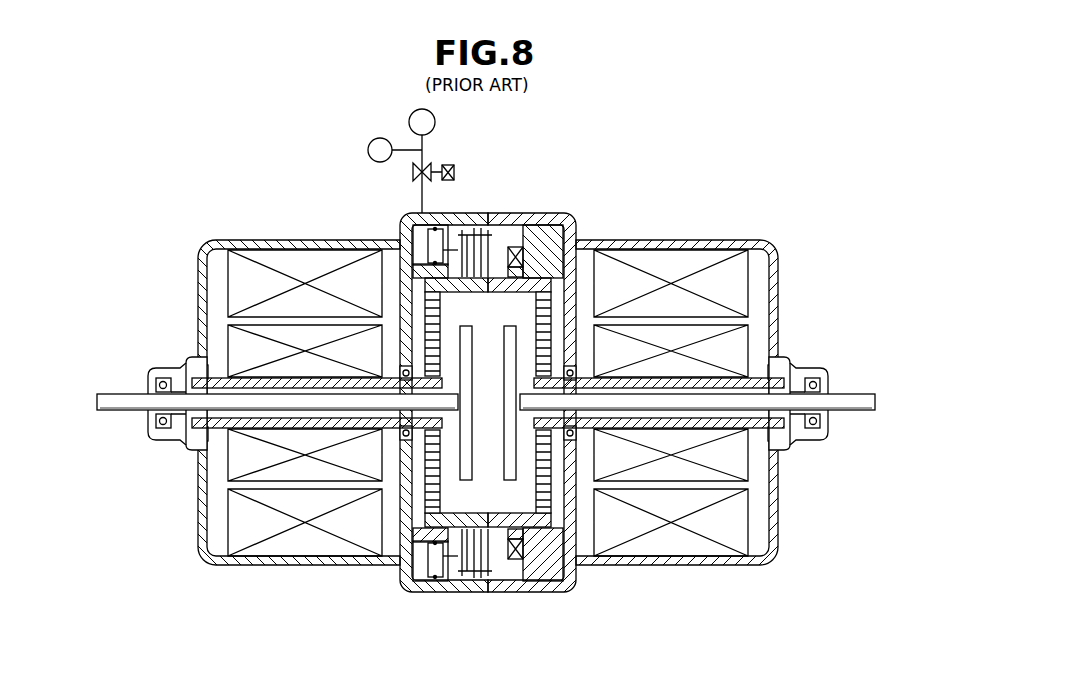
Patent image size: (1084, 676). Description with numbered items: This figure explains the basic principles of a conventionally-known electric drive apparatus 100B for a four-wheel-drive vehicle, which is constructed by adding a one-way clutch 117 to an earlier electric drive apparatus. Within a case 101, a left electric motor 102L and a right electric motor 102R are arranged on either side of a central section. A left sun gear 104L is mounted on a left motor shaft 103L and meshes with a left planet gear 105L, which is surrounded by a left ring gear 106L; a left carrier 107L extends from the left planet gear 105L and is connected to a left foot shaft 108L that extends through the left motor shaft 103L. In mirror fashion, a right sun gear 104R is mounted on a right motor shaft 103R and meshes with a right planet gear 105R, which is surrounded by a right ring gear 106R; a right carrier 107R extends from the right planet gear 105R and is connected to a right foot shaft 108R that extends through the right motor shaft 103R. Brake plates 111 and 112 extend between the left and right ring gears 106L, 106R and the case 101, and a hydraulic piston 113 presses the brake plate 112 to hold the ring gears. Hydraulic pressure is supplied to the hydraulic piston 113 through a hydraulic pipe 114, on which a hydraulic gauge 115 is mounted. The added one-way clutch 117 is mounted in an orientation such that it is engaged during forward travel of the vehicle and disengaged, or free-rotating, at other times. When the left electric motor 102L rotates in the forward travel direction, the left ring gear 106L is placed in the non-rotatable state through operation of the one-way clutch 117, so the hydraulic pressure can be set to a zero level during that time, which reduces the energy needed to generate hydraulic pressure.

The electric drive apparatus 100B is at (773, 198).
The case 101 is at (266, 240).
The left electric motor 102L is at (236, 579).
The right electric motor 102R is at (686, 574).
The left motor shaft 103L is at (190, 452).
The right motor shaft 103R is at (766, 378).
The left sun gear 104L is at (404, 455).
The right sun gear 104R is at (632, 242).
The left planet gear 105L is at (410, 503).
The right planet gear 105R is at (552, 330).
The left ring gear 106L is at (406, 448).
The right ring gear 106R is at (570, 366).
The left carrier 107L is at (462, 483).
The right carrier 107R is at (510, 483).
The left foot shaft 108L is at (110, 394).
The right foot shaft 108R is at (856, 393).
The brake plate 111 is at (500, 223).
The brake plate 112 is at (452, 220).
The hydraulic piston 113 is at (407, 227).
The hydraulic pipe 114 is at (418, 199).
The hydraulic gauge 115 is at (386, 139).
The one-way clutch 117 is at (550, 240).